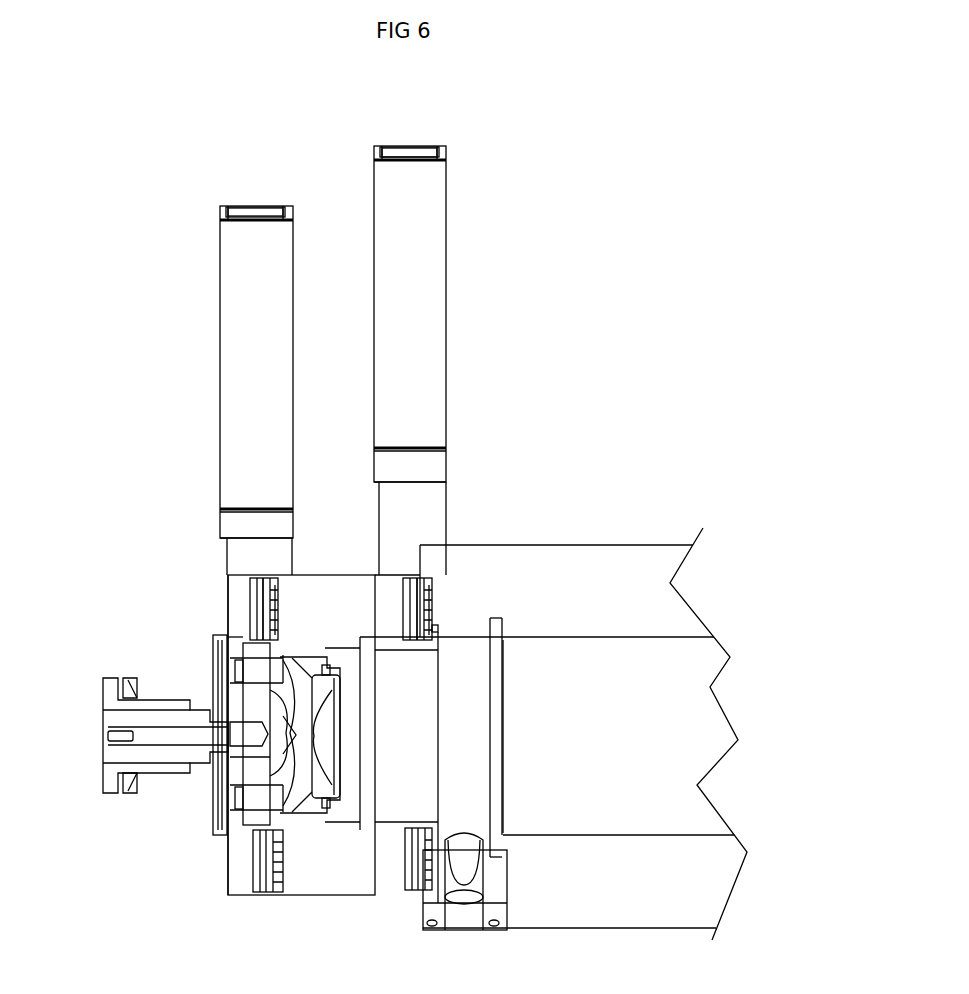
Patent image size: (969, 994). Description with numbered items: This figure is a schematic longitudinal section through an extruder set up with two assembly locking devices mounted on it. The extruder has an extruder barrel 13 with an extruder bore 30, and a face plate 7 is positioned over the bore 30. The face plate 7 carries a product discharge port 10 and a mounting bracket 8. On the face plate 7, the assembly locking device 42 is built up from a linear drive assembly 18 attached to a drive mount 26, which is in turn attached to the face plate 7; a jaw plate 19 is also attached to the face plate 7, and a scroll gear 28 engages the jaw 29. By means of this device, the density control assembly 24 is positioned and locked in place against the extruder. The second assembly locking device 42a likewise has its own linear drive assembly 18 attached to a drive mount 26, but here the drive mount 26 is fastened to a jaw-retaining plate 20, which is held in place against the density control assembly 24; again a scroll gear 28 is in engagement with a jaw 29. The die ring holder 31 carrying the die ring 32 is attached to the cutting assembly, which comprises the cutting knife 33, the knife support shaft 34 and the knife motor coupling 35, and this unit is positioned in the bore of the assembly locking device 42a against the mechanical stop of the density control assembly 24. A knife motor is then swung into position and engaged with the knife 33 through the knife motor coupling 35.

The face plate 7 is at (481, 565).
The mounting bracket 8 is at (441, 925).
The product discharge port 10 is at (476, 906).
The extruder barrel 13 is at (646, 572).
The linear drive assembly 18 is at (219, 262).
The jaw plate 19 is at (490, 458).
The jaw-retaining plate 20 is at (228, 585).
The density control assembly 24 is at (311, 896).
The drive mount 26 is at (226, 556).
The scroll gear 28 is at (331, 608).
The jaw 29 is at (249, 608).
The extruder bore 30 is at (672, 700).
The die ring holder 31 is at (250, 823).
The die ring 32 is at (232, 818).
The cutting knife 33 is at (212, 646).
The knife support shaft 34 is at (132, 694).
The knife motor coupling 35 is at (105, 752).
The assembly locking device 42 is at (430, 132).
The assembly locking device 42a is at (262, 190).